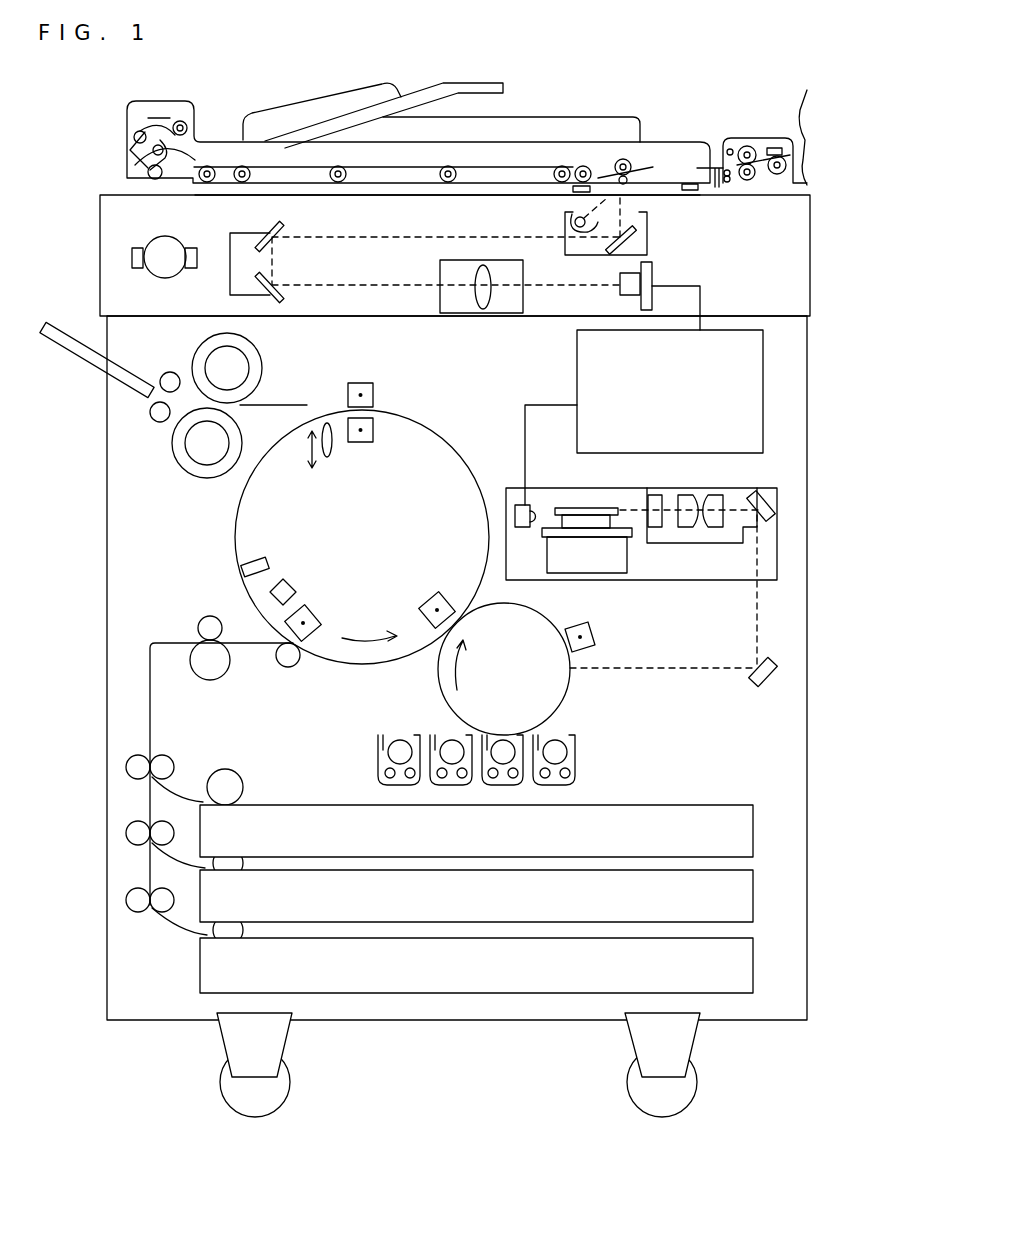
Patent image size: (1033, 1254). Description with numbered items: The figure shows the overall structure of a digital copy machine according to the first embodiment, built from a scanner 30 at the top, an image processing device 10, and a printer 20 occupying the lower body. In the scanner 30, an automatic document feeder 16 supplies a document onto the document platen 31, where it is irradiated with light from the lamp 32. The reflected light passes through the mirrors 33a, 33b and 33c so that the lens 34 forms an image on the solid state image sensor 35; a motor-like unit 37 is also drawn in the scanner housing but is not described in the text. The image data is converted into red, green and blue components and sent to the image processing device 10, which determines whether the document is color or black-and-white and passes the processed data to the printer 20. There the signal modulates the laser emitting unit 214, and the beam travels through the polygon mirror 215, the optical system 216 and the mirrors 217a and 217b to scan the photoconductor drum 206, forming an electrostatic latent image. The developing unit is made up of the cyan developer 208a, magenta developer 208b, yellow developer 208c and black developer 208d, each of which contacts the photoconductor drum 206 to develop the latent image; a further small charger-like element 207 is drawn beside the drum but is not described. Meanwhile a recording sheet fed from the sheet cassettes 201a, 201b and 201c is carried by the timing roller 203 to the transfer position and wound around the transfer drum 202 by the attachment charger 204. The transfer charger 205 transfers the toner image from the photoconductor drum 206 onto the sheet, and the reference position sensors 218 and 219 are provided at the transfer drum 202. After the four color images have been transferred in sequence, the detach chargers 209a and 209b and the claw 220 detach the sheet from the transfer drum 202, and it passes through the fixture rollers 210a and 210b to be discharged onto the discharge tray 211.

The image processing device 10 is at (683, 403).
The automatic document feeder 16 is at (668, 135).
The printer 20 is at (463, 371).
The scanner 30 is at (779, 254).
The document platen 31 is at (383, 195).
The lamp 32 is at (565, 218).
The mirror 33a is at (637, 230).
The mirror 33b is at (273, 227).
The mirror 33c is at (285, 297).
The lens 34 is at (470, 276).
The solid state image sensor 35 is at (620, 293).
The motor 37 is at (160, 238).
The sheet cassette 201a is at (382, 844).
The sheet cassette 201b is at (379, 909).
The sheet cassette 201c is at (379, 977).
The transfer drum 202 is at (235, 535).
The timing roller 203 is at (207, 616).
The attachment charger 204 is at (312, 612).
The transfer charger 205 is at (427, 600).
The photoconductor drum 206 is at (567, 695).
The transfer charger 207 is at (597, 633).
The cyan developer 208a is at (377, 757).
The magenta developer 208b is at (453, 787).
The yellow developer 208c is at (510, 787).
The black developer 208d is at (577, 755).
The detach charger 209a is at (363, 383).
The detach charger 209b is at (372, 443).
The fixture roller 210a is at (260, 353).
The fixture roller 210b is at (190, 470).
The discharge tray 211 is at (80, 360).
The laser emitting unit 214 is at (518, 503).
The polygon mirror 215 is at (617, 567).
The optical system 216 is at (713, 528).
The mirror 217a is at (743, 492).
The mirror 217b is at (763, 690).
The reference position sensor 218 is at (257, 558).
The reference position sensor 219 is at (288, 580).
The claw 220 is at (330, 460).